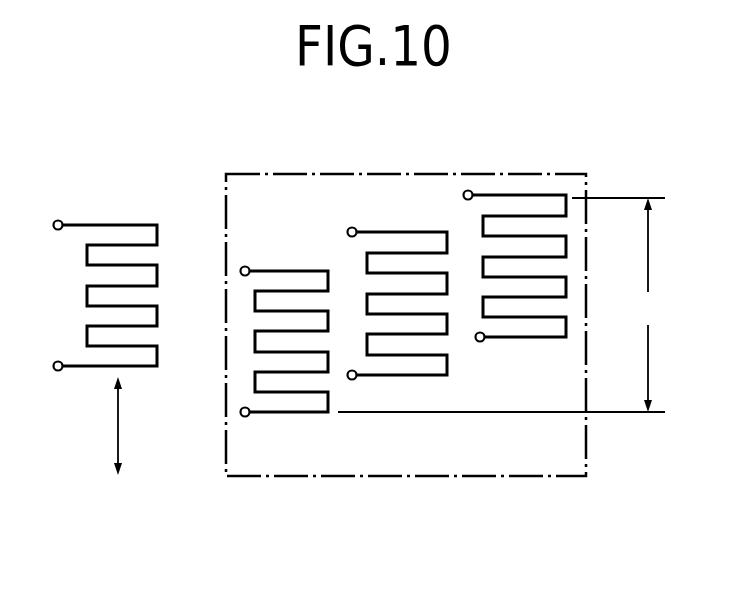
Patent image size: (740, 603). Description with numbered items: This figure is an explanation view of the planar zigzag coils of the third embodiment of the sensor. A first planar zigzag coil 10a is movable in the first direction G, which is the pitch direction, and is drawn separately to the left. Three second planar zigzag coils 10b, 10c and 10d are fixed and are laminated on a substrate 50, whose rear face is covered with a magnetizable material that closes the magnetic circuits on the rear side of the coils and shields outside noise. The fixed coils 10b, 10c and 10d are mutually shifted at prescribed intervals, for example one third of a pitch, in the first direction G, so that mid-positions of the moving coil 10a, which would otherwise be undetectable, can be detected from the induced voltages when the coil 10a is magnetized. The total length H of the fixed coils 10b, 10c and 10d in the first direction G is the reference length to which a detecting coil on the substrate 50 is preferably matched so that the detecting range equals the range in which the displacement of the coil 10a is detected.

The substrate 50 is at (477, 173).
The first planar zigzag coil 10a is at (107, 225).
The second planar zigzag coil 10b is at (302, 413).
The second planar zigzag coil 10c is at (403, 377).
The second planar zigzag coil 10d is at (523, 338).
The first direction G is at (118, 415).
The total length H is at (501, 305).